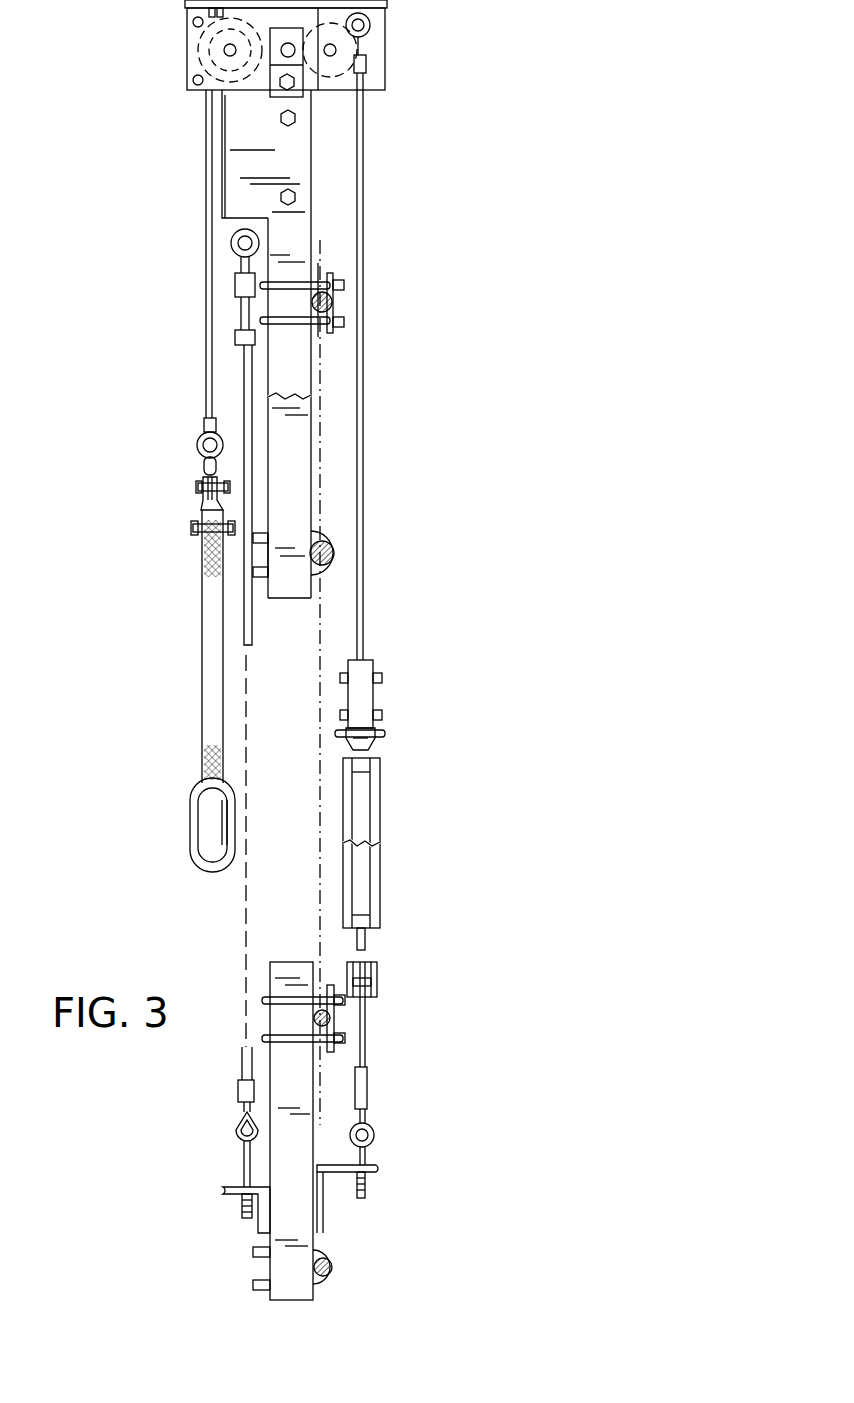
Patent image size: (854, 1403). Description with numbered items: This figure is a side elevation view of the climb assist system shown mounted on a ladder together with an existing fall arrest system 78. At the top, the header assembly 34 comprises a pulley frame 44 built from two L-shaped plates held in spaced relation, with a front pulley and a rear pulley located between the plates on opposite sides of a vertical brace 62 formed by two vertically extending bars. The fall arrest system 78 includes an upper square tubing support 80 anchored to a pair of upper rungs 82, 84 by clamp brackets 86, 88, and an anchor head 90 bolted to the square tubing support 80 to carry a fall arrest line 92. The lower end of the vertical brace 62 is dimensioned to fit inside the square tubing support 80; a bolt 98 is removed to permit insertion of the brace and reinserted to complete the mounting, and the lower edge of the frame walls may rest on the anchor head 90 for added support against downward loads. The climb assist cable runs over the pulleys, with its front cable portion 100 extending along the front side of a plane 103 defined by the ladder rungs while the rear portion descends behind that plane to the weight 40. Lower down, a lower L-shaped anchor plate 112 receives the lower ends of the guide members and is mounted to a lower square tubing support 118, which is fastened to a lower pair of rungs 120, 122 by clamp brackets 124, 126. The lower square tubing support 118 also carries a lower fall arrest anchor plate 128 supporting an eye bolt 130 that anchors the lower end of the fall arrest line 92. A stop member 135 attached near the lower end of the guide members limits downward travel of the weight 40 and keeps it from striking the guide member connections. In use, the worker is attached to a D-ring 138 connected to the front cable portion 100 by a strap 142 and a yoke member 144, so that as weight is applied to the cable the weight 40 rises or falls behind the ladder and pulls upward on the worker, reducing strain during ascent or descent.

The header assembly 34 is at (408, 40).
The weight 40 is at (366, 156).
The pulley frame 44 is at (182, 18).
The vertical brace 62 is at (263, 83).
The fall arrest system 78 is at (226, 233).
The upper square tubing support 80 is at (298, 258).
The upper rung 82 is at (333, 302).
The upper rung 84 is at (335, 553).
The clamp bracket 86 is at (336, 286).
The clamp bracket 88 is at (328, 538).
The anchor head 90 is at (225, 152).
The fall arrest line 92 is at (243, 392).
The bolt 98 is at (296, 118).
The front cable portion 100 is at (207, 300).
The plane 103 is at (318, 830).
The lower L-shaped anchor plate 112 is at (378, 1166).
The lower square tubing support 118 is at (303, 1078).
The lower rung 120 is at (335, 1266).
The lower rung 122 is at (331, 1020).
The clamp bracket 124 is at (338, 1282).
The clamp bracket 126 is at (345, 1009).
The lower fall arrest anchor plate 128 is at (262, 1225).
The eye bolt 130 is at (238, 1163).
The stop member 135 is at (383, 958).
The D-ring 138 is at (190, 815).
The strap 142 is at (208, 667).
The yoke member 144 is at (210, 462).